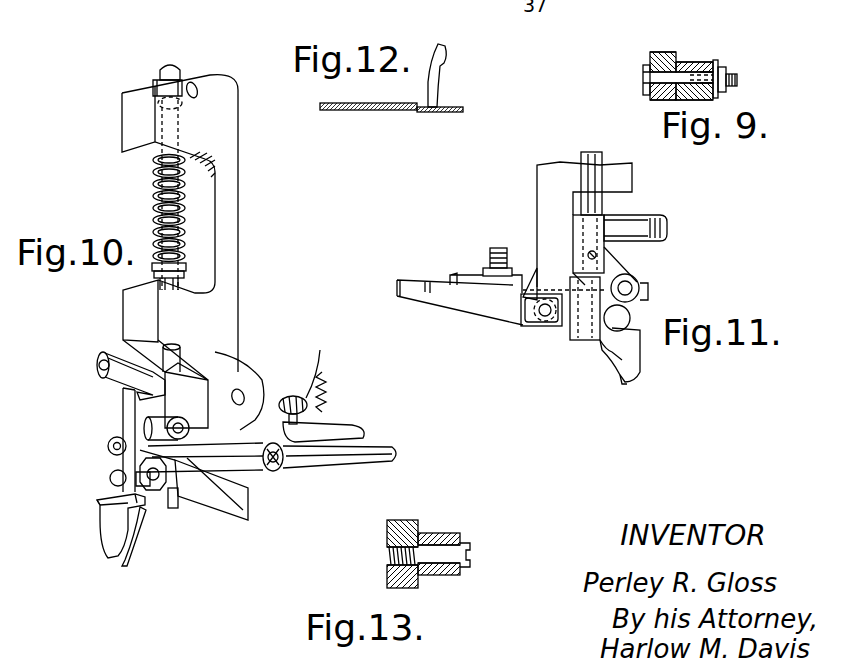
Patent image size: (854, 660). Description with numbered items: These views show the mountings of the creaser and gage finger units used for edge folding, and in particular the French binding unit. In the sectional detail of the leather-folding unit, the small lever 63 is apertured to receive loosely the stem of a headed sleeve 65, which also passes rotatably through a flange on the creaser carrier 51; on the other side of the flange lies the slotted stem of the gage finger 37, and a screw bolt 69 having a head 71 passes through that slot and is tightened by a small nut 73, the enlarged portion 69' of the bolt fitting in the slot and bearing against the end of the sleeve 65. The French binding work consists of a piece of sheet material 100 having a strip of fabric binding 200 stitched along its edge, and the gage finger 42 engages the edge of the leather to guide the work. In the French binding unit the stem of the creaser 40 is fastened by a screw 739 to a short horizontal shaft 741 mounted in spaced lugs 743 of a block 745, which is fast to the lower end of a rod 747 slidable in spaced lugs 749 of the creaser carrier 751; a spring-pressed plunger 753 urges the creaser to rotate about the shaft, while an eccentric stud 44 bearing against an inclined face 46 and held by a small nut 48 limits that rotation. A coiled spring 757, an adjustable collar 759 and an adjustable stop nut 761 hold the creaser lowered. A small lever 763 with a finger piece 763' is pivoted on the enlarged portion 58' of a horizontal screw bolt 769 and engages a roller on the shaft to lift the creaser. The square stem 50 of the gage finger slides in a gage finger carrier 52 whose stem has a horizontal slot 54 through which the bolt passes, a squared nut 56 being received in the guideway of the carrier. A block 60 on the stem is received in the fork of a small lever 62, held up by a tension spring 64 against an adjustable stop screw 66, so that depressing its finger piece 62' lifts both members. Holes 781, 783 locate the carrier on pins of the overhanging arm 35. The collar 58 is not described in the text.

In FIG. 10, the overhanging arm 35 is at (320, 362).
In FIG. 9, the gage finger 37 is at (647, 93).
In FIG. 10, the creaser 40 is at (108, 532).
In FIG. 11, the creaser 40 is at (630, 368).
In FIG. 12, the gage finger 42 is at (428, 67).
In FIG. 10, the gage finger 42 is at (130, 548).
In FIG. 11, the gage finger 42 is at (614, 380).
In FIG. 10, the eccentric stud 44 is at (110, 478).
In FIG. 11, the eccentric stud 44 is at (620, 317).
In FIG. 11, the inclined face 46 is at (607, 335).
In FIG. 10, the small nut 48 is at (140, 480).
In FIG. 10, the square stem 50 is at (174, 510).
In FIG. 11, the square stem 50 is at (583, 343).
In FIG. 9, the creaser carrier 51 is at (662, 53).
In FIG. 10, the gage finger carrier 52 is at (158, 492).
In FIG. 11, the gage finger carrier 52 is at (563, 293).
In FIG. 13, the gage finger carrier 52 is at (387, 585).
In FIG. 11, the horizontal slot 54 is at (520, 303).
In FIG. 11, the squared nut 56 is at (543, 313).
In FIG. 13, the squared nut 56 is at (387, 542).
In FIG. 10, the collar 58 is at (292, 475).
In FIG. 13, the enlarged portion 58' is at (467, 573).
In FIG. 10, the block 60 is at (238, 498).
In FIG. 10, the small lever 62 is at (211, 510).
In FIG. 13, the small lever 62 is at (433, 592).
In FIG. 10, the finger piece 62' is at (331, 419).
In FIG. 11, the finger piece 62' is at (481, 265).
In FIG. 9, the small lever 63 is at (700, 61).
In FIG. 10, the tension spring 64 is at (320, 390).
In FIG. 9, the headed sleeve 65 is at (716, 100).
In FIG. 10, the adjustable stop screw 66 is at (293, 396).
In FIG. 11, the adjustable stop screw 66 is at (498, 248).
In FIG. 9, the screw bolt 69 is at (756, 70).
In FIG. 9, the enlarged portion 69' is at (646, 84).
In FIG. 9, the head 71 is at (646, 68).
In FIG. 9, the small nut 73 is at (720, 65).
In FIG. 12, the sheet material 100 is at (372, 111).
In FIG. 12, the fabric binding 200 is at (450, 113).
In FIG. 10, the screw 739 is at (110, 444).
In FIG. 10, the short horizontal shaft 741 is at (178, 416).
In FIG. 11, the short horizontal shaft 741 is at (627, 287).
In FIG. 10, the spaced lugs 743 is at (128, 435).
In FIG. 10, the block 745 is at (190, 382).
In FIG. 11, the block 745 is at (588, 244).
In FIG. 10, the rod 747 is at (168, 66).
In FIG. 11, the rod 747 is at (584, 155).
In FIG. 10, the spaced lugs 749 is at (130, 128).
In FIG. 10, the creaser carrier 751 is at (232, 138).
In FIG. 11, the creaser carrier 751 is at (547, 182).
In FIG. 13, the creaser carrier 751 is at (420, 523).
In FIG. 10, the spring-pressed plunger 753 is at (140, 370).
In FIG. 11, the spring-pressed plunger 753 is at (612, 214).
In FIG. 10, the coiled spring 757 is at (153, 193).
In FIG. 10, the adjustable collar 759 is at (190, 263).
In FIG. 10, the adjustable stop nut 761 is at (182, 90).
In FIG. 10, the small lever 763 is at (219, 480).
In FIG. 13, the small lever 763 is at (471, 545).
In FIG. 10, the finger piece 763' is at (364, 442).
In FIG. 11, the finger piece 763' is at (458, 286).
In FIG. 11, the screw bolt 769 is at (545, 317).
In FIG. 13, the screw bolt 769 is at (387, 548).
In FIG. 10, the hole 781 is at (200, 90).
In FIG. 10, the hole 783 is at (240, 402).